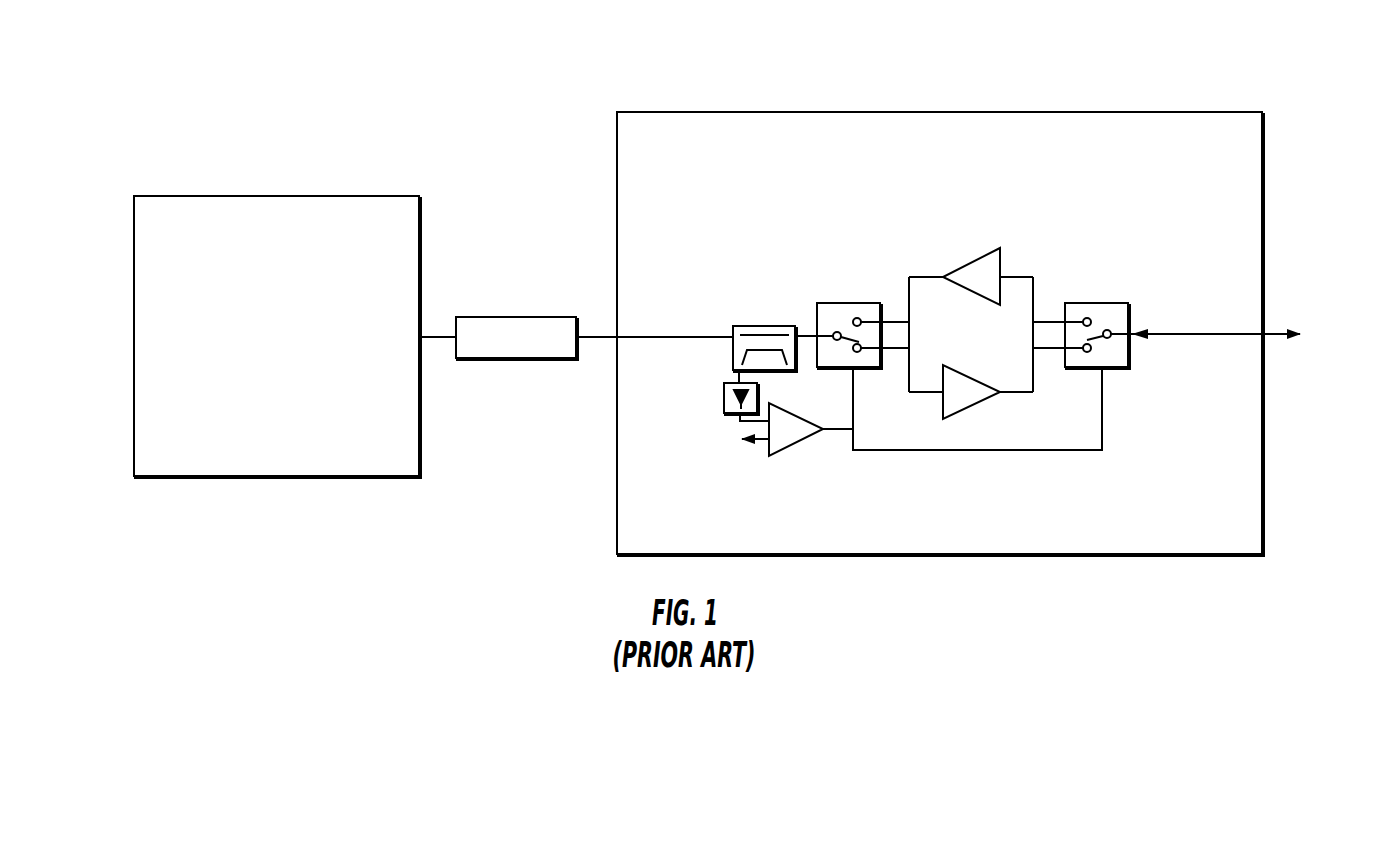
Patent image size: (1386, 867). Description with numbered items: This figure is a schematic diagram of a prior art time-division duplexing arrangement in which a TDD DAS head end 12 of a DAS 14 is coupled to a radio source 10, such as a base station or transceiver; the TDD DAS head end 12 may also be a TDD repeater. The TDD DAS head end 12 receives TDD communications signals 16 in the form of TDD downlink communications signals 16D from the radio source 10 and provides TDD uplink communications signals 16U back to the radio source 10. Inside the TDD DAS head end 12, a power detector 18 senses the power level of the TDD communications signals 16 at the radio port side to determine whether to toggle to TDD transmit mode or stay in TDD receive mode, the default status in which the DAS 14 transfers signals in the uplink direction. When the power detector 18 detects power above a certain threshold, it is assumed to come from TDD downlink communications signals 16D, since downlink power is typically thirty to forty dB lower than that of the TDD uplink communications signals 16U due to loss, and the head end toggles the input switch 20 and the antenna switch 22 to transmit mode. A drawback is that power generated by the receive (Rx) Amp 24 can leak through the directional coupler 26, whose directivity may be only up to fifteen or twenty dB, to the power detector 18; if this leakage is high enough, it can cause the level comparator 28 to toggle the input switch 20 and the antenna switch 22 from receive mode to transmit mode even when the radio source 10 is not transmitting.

The radio source 10 is at (277, 336).
The TDD DAS head end 12 is at (940, 333).
The DAS 14 is at (1094, 88).
The TDD communications signals 16 is at (504, 351).
The TDD downlink communications signals 16D is at (516, 361).
The TDD uplink communications signals 16U is at (671, 336).
The power detector 18 is at (724, 398).
The input switch 20 is at (853, 303).
The antenna switch 22 is at (1093, 303).
The receive (Rx) Amp 24 is at (978, 258).
The directional coupler 26 is at (772, 326).
The level comparator 28 is at (796, 445).